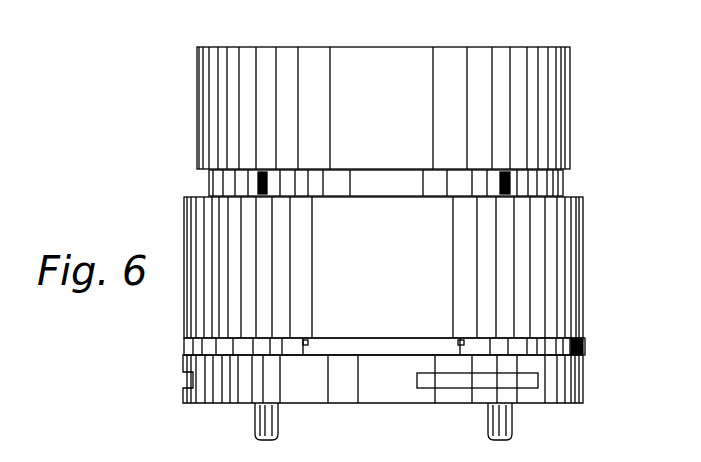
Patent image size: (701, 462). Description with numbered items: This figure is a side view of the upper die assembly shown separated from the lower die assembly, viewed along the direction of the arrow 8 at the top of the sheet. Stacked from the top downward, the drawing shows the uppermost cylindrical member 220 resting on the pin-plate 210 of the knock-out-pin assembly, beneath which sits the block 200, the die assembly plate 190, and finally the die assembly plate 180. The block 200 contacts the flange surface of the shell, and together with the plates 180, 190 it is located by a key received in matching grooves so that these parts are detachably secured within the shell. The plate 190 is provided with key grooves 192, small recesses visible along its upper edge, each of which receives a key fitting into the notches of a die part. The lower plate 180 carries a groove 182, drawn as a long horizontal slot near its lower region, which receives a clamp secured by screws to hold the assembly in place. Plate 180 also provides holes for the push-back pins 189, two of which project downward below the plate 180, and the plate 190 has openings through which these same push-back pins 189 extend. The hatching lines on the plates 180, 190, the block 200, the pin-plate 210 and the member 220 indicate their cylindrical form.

The section line / viewing direction arrow 8 is at (383, 0).
The upper cylinder 220 is at (197, 114).
The pin-plate 210 is at (208, 187).
The block 200 is at (585, 262).
The die assembly plate 190 is at (585, 345).
The key grooves 192 is at (305, 340).
The die assembly plate 180 is at (592, 398).
The grooves 182 is at (453, 380).
The push-back pins 189 is at (280, 425).